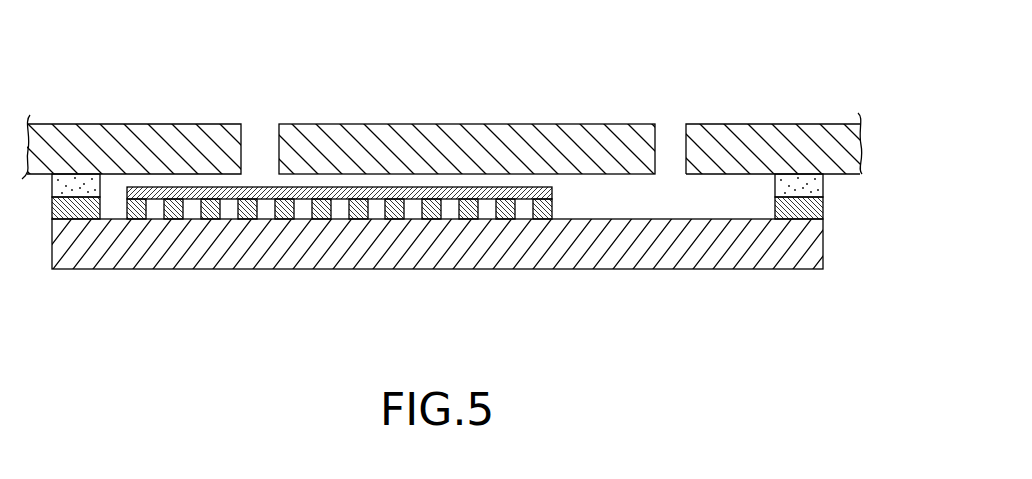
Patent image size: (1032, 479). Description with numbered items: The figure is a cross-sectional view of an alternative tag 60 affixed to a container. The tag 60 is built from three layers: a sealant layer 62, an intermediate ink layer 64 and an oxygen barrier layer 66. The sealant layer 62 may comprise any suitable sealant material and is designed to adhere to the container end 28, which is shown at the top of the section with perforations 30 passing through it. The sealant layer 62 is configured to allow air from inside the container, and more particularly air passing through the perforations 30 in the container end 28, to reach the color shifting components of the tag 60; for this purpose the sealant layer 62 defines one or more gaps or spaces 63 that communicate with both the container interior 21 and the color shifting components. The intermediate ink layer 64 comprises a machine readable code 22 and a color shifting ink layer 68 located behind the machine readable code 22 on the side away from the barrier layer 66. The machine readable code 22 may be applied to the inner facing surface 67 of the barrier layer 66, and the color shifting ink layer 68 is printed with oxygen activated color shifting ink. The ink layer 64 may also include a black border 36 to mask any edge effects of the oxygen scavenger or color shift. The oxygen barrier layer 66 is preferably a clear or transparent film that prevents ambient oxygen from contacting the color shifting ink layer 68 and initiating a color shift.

The container interior 21 is at (511, 96).
The machine readable code 22 is at (318, 219).
The container end 28 is at (774, 123).
The perforations 30 is at (259, 141).
The black border 36 is at (823, 216).
The tag 60 is at (133, 338).
The sealant layer 62 is at (823, 188).
The gaps or spaces 63 is at (659, 186).
The ink layer 64 is at (823, 210).
The oxygen barrier layer 66 is at (823, 243).
The inner facing surface 67 is at (703, 218).
The color shifting ink layer 68 is at (375, 191).